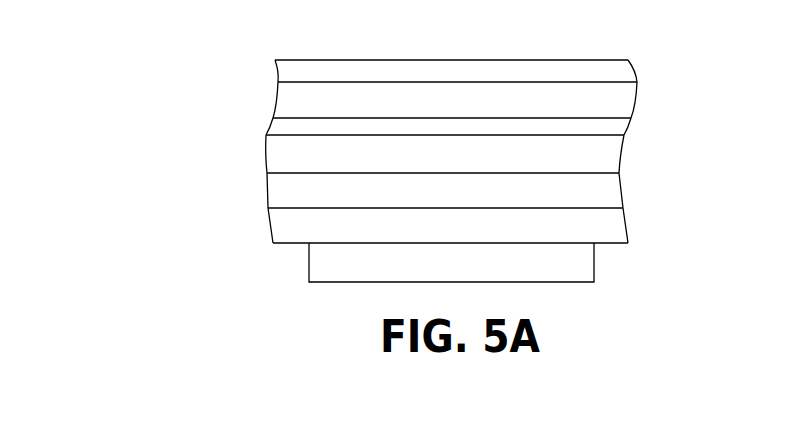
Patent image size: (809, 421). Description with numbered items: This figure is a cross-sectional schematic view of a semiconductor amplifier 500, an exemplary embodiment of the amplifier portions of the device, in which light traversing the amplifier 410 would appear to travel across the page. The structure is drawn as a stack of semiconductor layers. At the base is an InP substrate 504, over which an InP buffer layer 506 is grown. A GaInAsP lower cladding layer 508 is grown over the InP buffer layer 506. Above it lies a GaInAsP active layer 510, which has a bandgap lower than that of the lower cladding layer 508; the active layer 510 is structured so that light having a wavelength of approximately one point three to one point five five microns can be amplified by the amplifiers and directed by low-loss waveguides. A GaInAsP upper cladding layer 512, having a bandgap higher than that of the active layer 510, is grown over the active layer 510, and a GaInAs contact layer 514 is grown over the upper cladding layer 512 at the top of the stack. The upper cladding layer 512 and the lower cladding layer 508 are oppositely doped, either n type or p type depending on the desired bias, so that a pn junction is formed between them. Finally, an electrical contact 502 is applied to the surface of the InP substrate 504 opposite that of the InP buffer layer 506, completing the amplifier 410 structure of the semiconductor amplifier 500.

The semiconductor amplifier 500 is at (136, 37).
The amplifier 410 is at (182, 56).
The electrical contact 502 is at (480, 277).
The InP substrate 504 is at (625, 220).
The InP buffer layer 506 is at (266, 188).
The GaInAsP lower cladding layer 508 is at (621, 152).
The GaInAsP active layer 510 is at (270, 125).
The GaInAsP upper cladding layer 512 is at (636, 100).
The GaInAs contact layer 514 is at (278, 71).